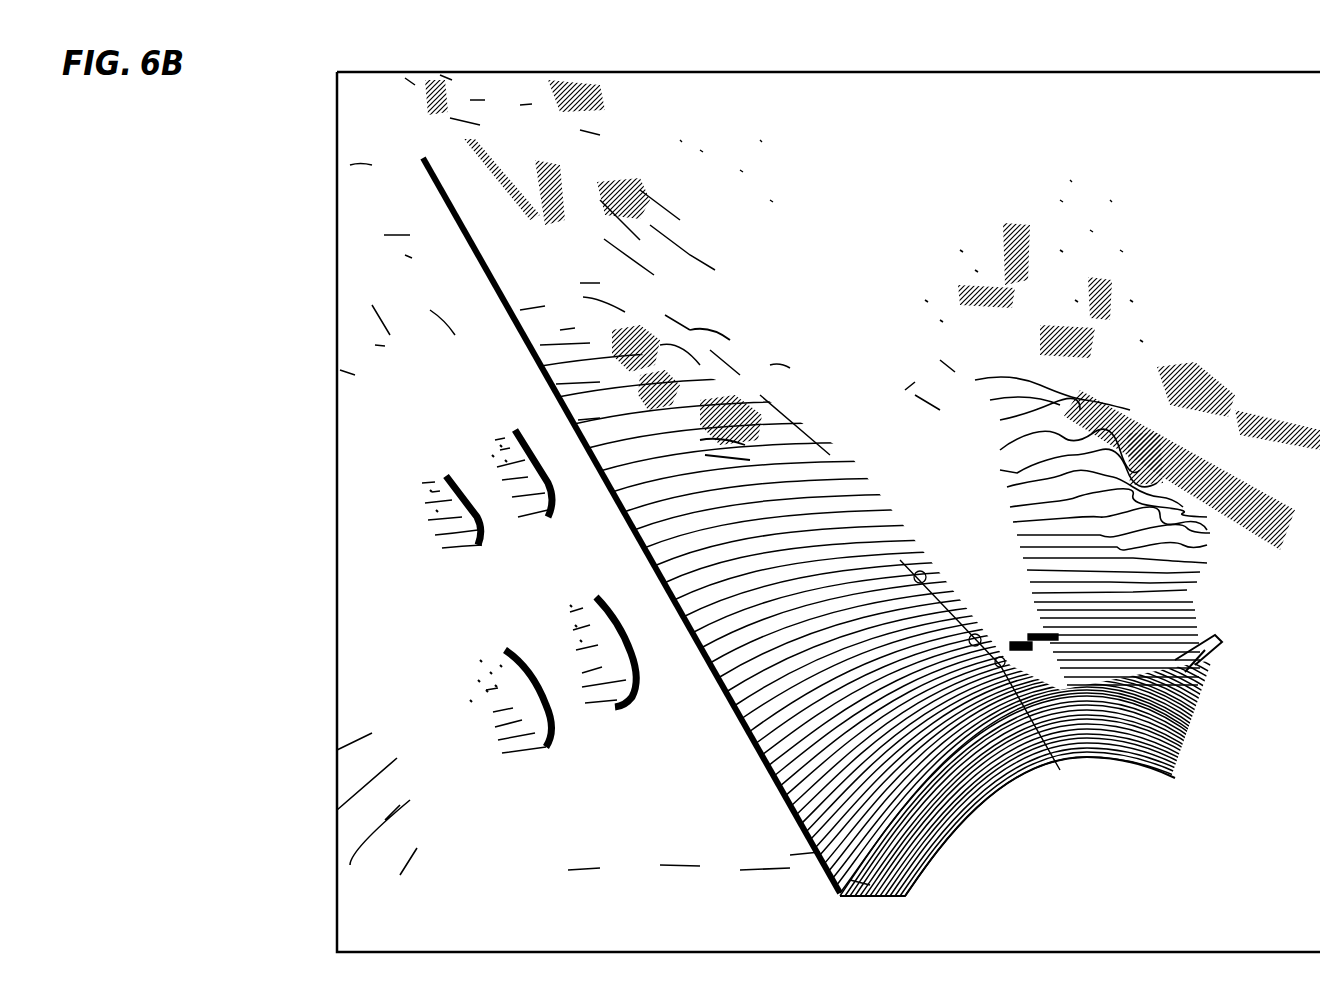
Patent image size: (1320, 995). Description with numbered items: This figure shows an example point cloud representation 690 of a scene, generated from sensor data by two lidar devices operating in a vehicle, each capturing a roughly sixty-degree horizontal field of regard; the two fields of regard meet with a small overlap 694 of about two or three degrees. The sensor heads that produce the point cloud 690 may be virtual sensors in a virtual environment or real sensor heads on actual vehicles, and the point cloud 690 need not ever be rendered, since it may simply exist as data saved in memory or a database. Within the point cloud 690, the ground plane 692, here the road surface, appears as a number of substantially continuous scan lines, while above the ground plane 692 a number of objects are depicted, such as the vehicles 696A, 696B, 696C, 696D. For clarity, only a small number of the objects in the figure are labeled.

The point cloud representation 690 is at (300, 110).
The ground plane 692 is at (1068, 782).
The overlap 694 is at (1013, 807).
The vehicle 696A is at (592, 517).
The vehicle 696B is at (1182, 750).
The vehicle 696C is at (639, 718).
The vehicle 696D is at (663, 330).